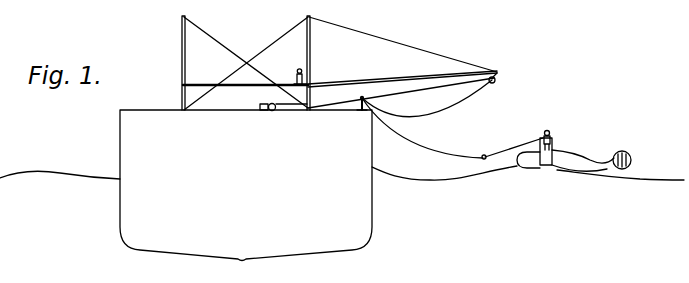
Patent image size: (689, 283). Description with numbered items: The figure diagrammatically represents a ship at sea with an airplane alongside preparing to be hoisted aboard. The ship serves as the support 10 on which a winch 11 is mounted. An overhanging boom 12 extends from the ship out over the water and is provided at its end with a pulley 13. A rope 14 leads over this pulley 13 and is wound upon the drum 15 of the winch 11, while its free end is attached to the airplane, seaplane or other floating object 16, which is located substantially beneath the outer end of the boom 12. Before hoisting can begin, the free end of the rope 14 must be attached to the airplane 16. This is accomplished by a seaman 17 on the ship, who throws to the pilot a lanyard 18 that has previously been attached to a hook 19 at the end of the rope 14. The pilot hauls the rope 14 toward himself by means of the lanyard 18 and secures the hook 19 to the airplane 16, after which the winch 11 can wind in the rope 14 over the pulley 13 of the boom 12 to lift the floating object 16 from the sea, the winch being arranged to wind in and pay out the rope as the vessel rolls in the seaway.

The support 10 is at (138, 199).
The winch 11 is at (260, 102).
The overhanging boom 12 is at (425, 76).
The pulley 13 is at (500, 79).
The rope 14 is at (472, 98).
The drum 15 is at (270, 112).
The airplane or seaplane or other floating object 16 is at (570, 170).
The seaman 17 is at (359, 103).
The lanyard 18 is at (511, 146).
The hook 19 is at (484, 154).